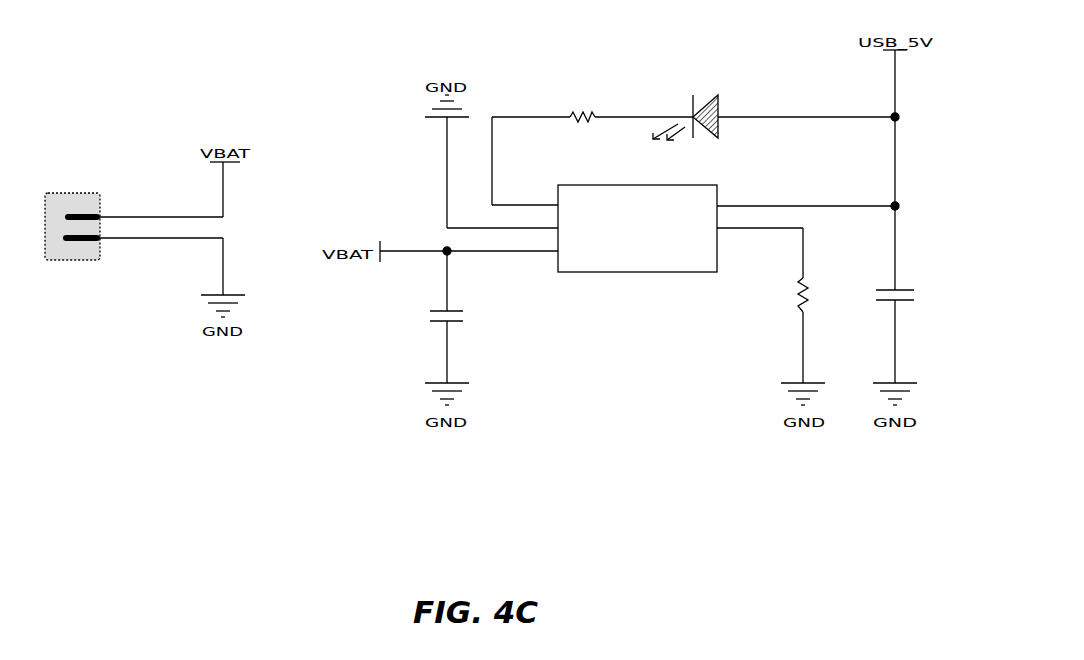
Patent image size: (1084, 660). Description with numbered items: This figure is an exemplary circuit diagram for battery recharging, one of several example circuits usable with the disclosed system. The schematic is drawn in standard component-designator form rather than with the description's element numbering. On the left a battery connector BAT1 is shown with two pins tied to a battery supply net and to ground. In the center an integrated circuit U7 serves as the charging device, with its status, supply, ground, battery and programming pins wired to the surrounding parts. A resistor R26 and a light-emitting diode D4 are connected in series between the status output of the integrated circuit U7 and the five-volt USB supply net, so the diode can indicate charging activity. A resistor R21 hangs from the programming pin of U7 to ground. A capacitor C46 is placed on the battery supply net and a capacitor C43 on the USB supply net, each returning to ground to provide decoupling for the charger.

The battery connector S2B-PH-SM4-TB BAT1 is at (117, 229).
The charge controller MCP73831 U7 is at (638, 230).
The resistor 510R 5% R26 is at (593, 119).
The LED LR QH8F-P2R1-1 D4 is at (732, 110).
The resistor 10K R21 is at (823, 294).
The capacitor 4.7uF 10V C46 is at (470, 328).
The capacitor 4.7uF 10V C43 is at (918, 306).